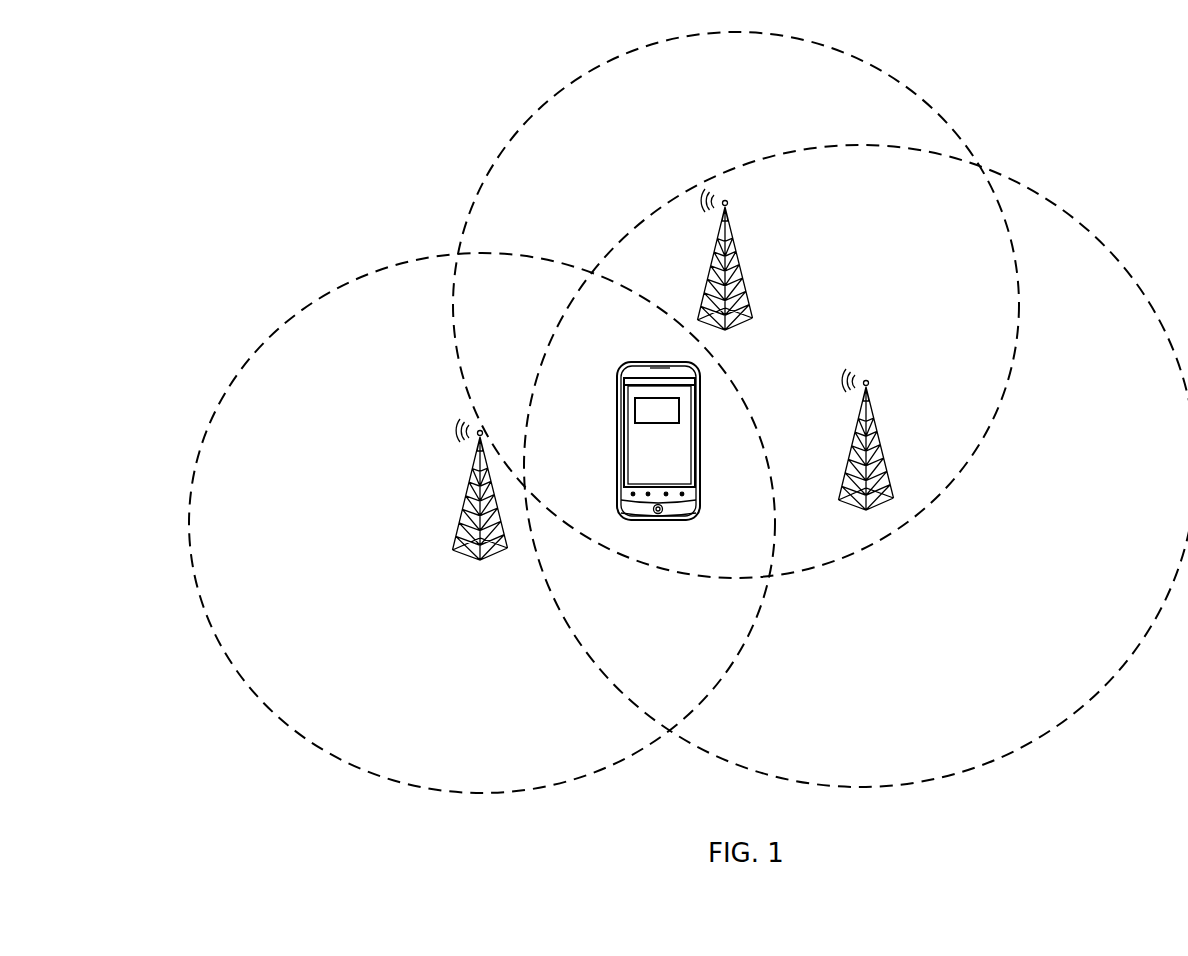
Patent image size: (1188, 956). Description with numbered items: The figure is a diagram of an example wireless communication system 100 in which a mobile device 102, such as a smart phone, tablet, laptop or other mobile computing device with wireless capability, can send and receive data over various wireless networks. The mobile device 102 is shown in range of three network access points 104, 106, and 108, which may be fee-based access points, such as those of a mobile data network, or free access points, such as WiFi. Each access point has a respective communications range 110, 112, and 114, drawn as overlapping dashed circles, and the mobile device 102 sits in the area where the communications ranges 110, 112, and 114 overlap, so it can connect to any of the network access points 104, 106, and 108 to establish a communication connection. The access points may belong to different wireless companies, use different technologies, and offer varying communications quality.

The wireless communication system 100 is at (240, 745).
The mobile device 102 is at (660, 362).
The network access point 104 is at (464, 500).
The network access point 106 is at (742, 266).
The network access point 108 is at (880, 446).
The communications range 110 is at (312, 298).
The communications range 112 is at (955, 135).
The communications range 114 is at (1066, 220).